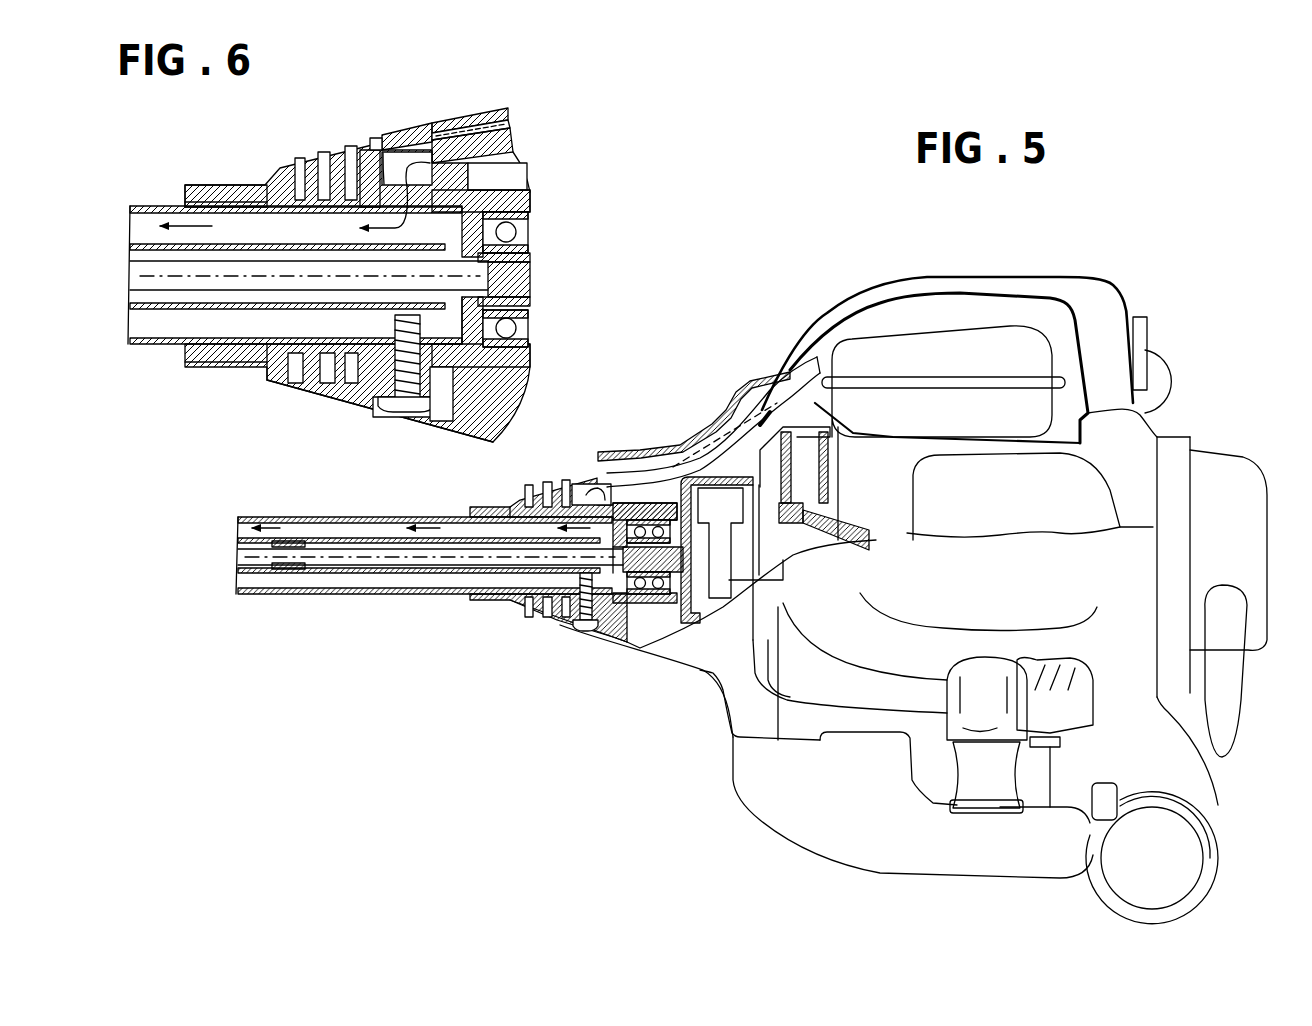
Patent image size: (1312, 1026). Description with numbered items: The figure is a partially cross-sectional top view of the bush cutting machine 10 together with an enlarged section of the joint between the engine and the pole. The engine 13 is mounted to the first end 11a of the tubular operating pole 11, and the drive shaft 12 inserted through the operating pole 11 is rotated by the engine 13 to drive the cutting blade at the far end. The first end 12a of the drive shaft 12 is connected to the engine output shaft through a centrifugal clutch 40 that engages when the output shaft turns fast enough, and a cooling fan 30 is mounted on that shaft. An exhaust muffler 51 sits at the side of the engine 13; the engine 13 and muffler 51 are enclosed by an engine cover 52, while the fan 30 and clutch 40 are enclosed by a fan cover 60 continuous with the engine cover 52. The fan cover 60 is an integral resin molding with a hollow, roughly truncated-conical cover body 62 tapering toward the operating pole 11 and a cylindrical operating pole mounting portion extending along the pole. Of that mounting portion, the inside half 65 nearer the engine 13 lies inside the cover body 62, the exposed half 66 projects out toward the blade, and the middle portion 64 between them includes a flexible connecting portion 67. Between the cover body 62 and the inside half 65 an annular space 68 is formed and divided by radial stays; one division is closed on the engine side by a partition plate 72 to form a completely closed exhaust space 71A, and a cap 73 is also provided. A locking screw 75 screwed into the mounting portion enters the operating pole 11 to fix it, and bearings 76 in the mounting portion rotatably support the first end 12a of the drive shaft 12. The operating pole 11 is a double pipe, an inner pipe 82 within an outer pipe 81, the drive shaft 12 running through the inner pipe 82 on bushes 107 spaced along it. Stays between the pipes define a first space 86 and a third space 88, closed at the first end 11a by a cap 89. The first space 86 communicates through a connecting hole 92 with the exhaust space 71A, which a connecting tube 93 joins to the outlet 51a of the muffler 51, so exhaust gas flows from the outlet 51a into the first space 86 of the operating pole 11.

In FIG. 6, the bush cutting machine 10 is at (630, 146).
In FIG. 5, the bush cutting machine 10 is at (1187, 265).
In FIG. 6, the operating pole 11 is at (203, 448).
In FIG. 5, the operating pole 11 is at (400, 662).
In FIG. 6, the first end of the operating pole 11a is at (440, 372).
In FIG. 5, the first end of the operating pole 11a is at (640, 602).
In FIG. 6, the drive shaft 12 is at (152, 278).
In FIG. 5, the drive shaft 12 is at (238, 580).
In FIG. 6, the first end of the drive shaft 12a is at (532, 276).
In FIG. 5, the first end of the drive shaft 12a is at (700, 598).
In FIG. 5, the engine 13 is at (1137, 455).
In FIG. 5, the cooling fan 30 is at (803, 540).
In FIG. 5, the clutch 40 is at (732, 610).
In FIG. 5, the exhaust muffler 51 is at (997, 337).
In FIG. 5, the outlet of the exhaust muffler 51a is at (827, 370).
In FIG. 5, the engine cover 52 is at (873, 693).
In FIG. 6, the fan cover 60 is at (465, 438).
In FIG. 5, the fan cover 60 is at (678, 667).
In FIG. 6, the cover body 62 is at (493, 115).
In FIG. 5, the cover body 62 is at (703, 447).
In FIG. 6, the middle portion 64 is at (352, 384).
In FIG. 5, the middle portion 64 is at (556, 610).
In FIG. 6, the inside half 65 is at (520, 202).
In FIG. 5, the inside half 65 is at (655, 504).
In FIG. 6, the exposed half 66 is at (258, 342).
In FIG. 5, the exposed half 66 is at (500, 606).
In FIG. 6, the flexible connecting portion 67 is at (308, 384).
In FIG. 5, the flexible connecting portion 67 is at (526, 612).
In FIG. 6, the annular space 68 is at (510, 175).
In FIG. 5, the annular space 68 is at (660, 450).
In FIG. 6, the exhaust space 71A is at (385, 150).
In FIG. 5, the exhaust space 71A is at (603, 505).
In FIG. 6, the partition plate 72 is at (462, 185).
In FIG. 5, the partition plate 72 is at (630, 504).
In FIG. 6, the cap 73 is at (420, 128).
In FIG. 6, the locking screw 75 is at (405, 408).
In FIG. 5, the locking screw 75 is at (586, 630).
In FIG. 6, the bearings 76 is at (522, 235).
In FIG. 5, the bearings 76 is at (642, 546).
In FIG. 6, the outer pipe 81 is at (168, 346).
In FIG. 5, the outer pipe 81 is at (336, 596).
In FIG. 6, the inner pipe 82 is at (215, 310).
In FIG. 5, the inner pipe 82 is at (392, 576).
In FIG. 6, the first space 86 is at (250, 232).
In FIG. 5, the first space 86 is at (456, 522).
In FIG. 6, the third space 88 is at (246, 322).
In FIG. 5, the third space 88 is at (420, 586).
In FIG. 6, the cap 89 is at (478, 338).
In FIG. 6, the connecting hole 92 is at (372, 152).
In FIG. 6, the connecting tube 93 is at (512, 130).
In FIG. 5, the connecting tube 93 is at (800, 372).
In FIG. 5, the bushes 107 is at (284, 568).